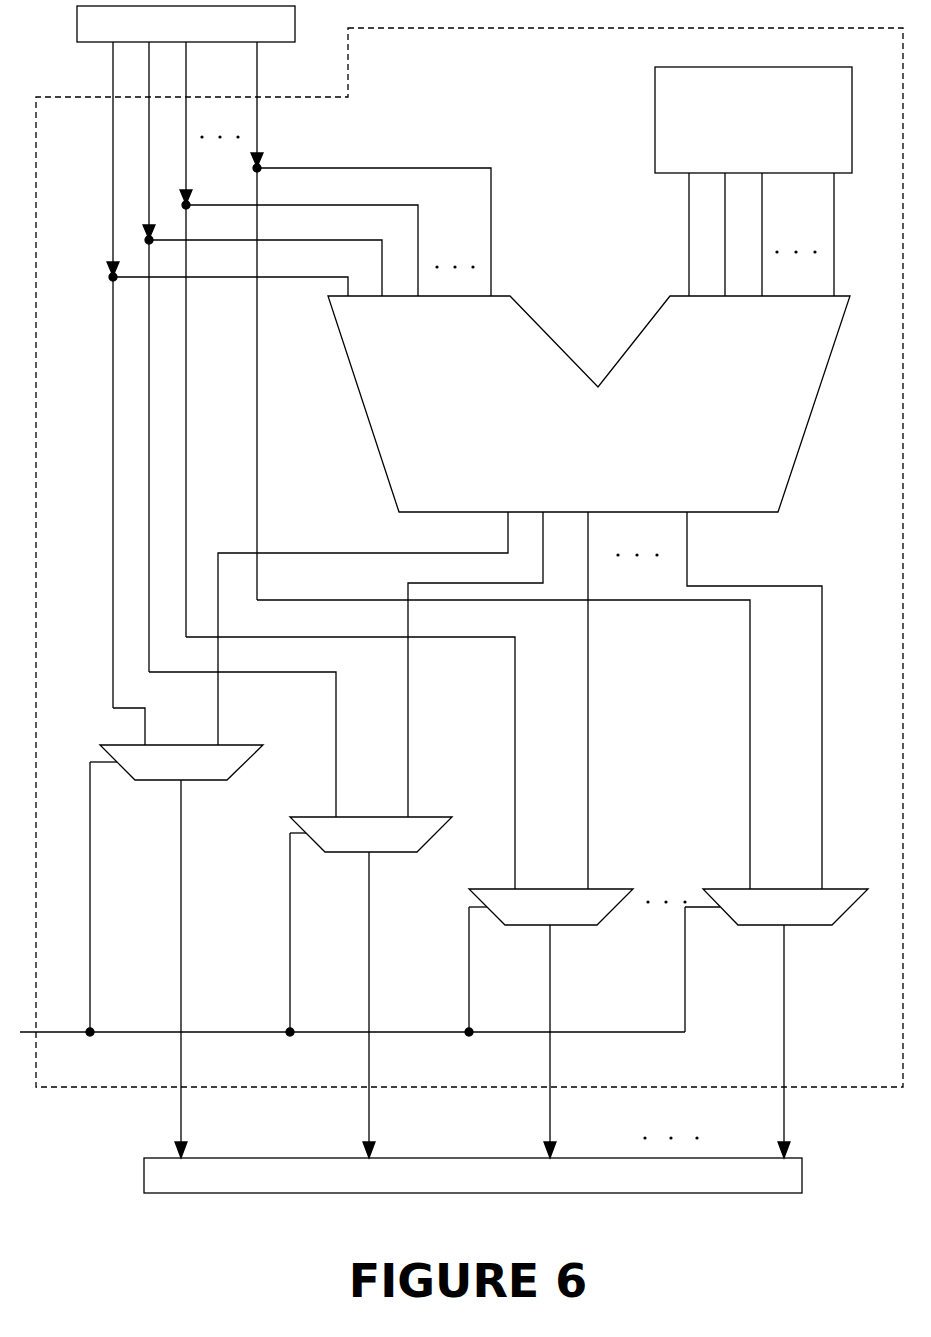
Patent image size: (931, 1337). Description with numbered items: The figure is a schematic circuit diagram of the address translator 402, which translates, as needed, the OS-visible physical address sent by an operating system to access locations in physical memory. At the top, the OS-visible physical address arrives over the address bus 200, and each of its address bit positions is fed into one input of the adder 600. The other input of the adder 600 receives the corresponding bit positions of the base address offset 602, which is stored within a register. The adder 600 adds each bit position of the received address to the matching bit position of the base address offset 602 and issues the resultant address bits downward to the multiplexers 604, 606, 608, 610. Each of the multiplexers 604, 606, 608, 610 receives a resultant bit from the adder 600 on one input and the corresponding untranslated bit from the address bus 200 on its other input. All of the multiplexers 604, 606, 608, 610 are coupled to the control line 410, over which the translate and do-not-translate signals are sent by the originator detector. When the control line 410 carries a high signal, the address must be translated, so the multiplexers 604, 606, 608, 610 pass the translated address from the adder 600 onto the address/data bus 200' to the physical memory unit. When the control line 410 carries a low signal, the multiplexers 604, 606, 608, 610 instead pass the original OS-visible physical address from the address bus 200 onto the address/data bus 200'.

The address bus 200 is at (216, 21).
The address translator 402 is at (476, 24).
The base address offset 602 is at (827, 166).
The adder 600 is at (752, 502).
The multiplexer 604 is at (162, 783).
The multiplexer 606 is at (358, 854).
The multiplexer 608 is at (541, 927).
The multiplexer 610 is at (792, 927).
The control line 410 is at (22, 1034).
The address/data bus 200' is at (473, 1153).